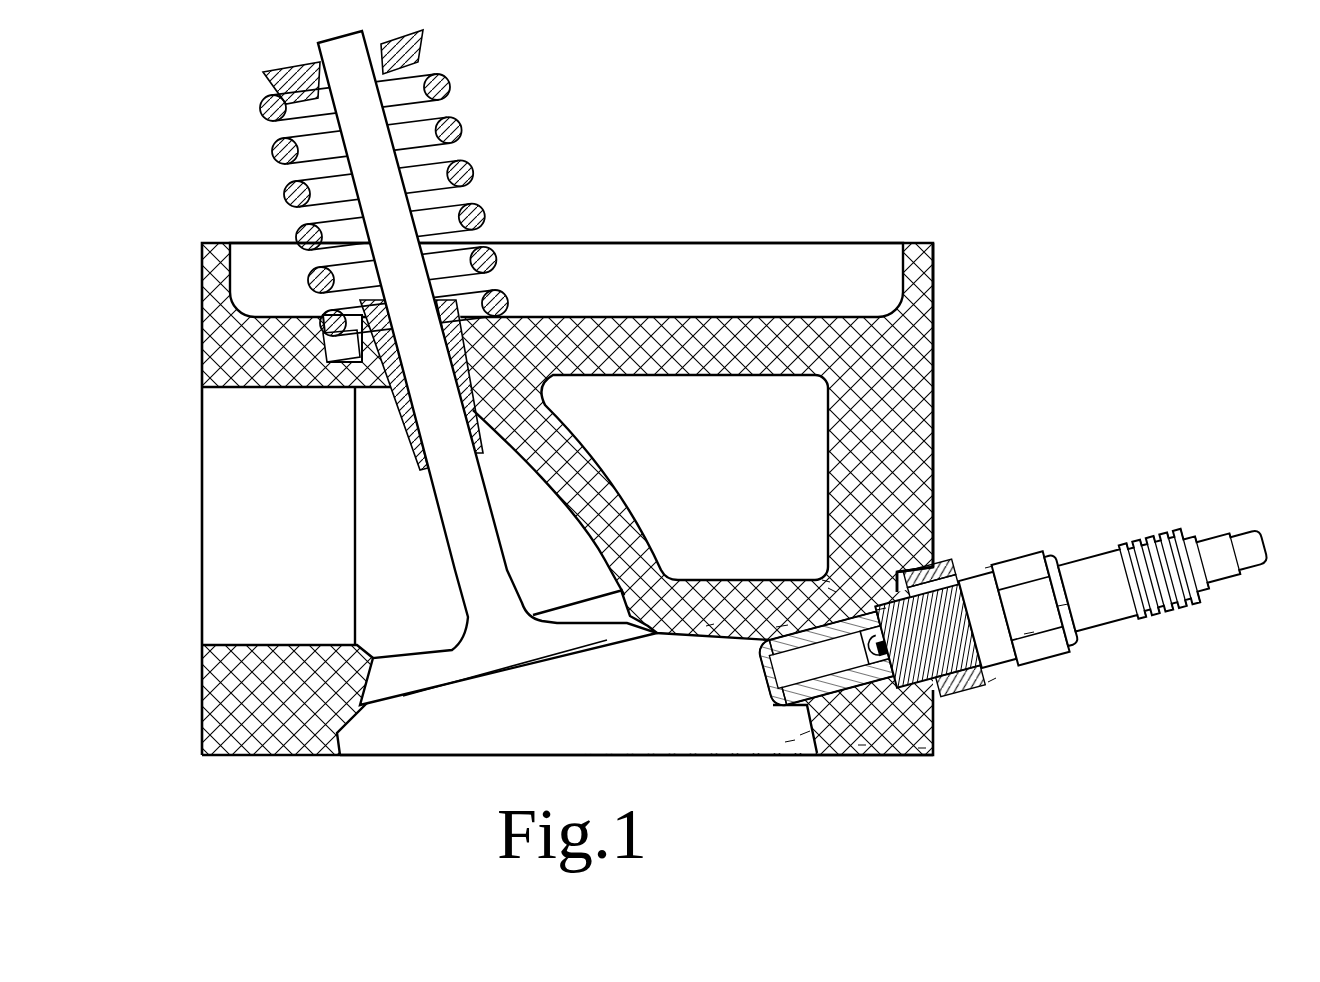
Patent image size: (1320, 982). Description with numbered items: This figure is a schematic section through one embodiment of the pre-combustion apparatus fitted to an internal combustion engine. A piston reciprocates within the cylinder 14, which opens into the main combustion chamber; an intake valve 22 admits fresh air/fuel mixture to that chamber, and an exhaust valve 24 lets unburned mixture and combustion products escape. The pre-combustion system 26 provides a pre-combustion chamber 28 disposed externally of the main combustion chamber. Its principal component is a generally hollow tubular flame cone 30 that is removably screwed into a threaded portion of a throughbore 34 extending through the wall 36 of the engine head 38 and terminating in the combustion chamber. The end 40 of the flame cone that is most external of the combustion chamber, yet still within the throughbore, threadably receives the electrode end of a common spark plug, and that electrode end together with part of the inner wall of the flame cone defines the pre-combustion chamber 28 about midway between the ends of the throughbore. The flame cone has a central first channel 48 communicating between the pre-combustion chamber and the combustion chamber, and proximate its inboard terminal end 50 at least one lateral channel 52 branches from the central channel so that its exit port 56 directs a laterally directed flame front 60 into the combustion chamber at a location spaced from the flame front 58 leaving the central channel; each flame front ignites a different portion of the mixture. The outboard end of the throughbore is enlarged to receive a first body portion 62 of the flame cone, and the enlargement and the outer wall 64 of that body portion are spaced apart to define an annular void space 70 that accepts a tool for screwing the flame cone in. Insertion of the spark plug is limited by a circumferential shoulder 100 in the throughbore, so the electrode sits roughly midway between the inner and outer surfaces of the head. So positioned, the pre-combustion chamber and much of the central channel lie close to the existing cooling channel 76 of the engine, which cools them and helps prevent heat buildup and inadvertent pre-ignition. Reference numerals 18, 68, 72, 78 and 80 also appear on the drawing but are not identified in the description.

The cylinder 14 is at (512, 712).
The spark plug assembly 18 is at (969, 668).
The intake valve 22 is at (790, 742).
The exhaust valve 24 is at (933, 745).
The pre-combustion system 26 is at (1052, 682).
The pre-combustion chamber 28 is at (877, 562).
The flame cone 30 is at (912, 243).
The throughbore 34 is at (903, 570).
The wall 36 is at (772, 655).
The head 38 is at (933, 276).
The end of the flame cone 40 is at (660, 735).
The central first channel 48 is at (693, 590).
The inboard terminal end 50 is at (838, 755).
The lateral channel 52 is at (827, 580).
The exit port 56 is at (922, 748).
The flame front 58 is at (805, 733).
The flame front 60 is at (833, 590).
The first body portion 62 is at (782, 626).
The outer wall 64 is at (710, 626).
The ground electrode 68 is at (862, 745).
The annular void space 70 is at (933, 513).
The hex nut 72 is at (968, 585).
The cooling channel 76 is at (631, 396).
The insulator 78 is at (992, 680).
The terminal 80 is at (1028, 633).
The circumferential shoulder 100 is at (1062, 605).